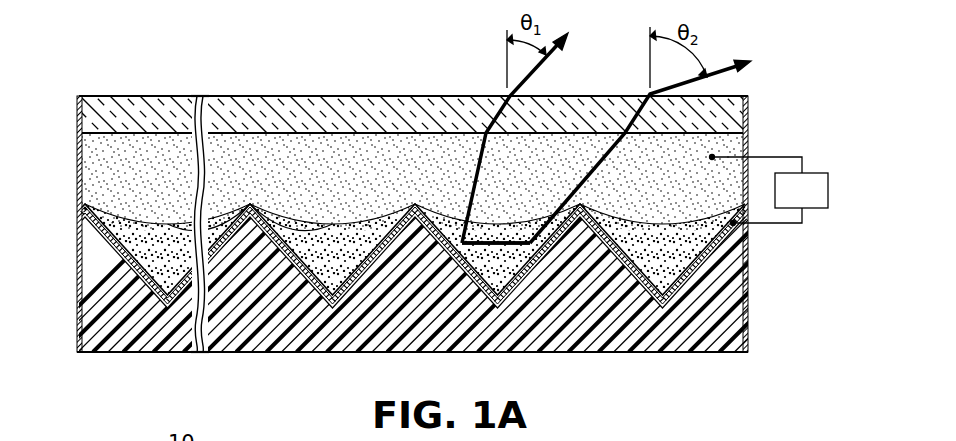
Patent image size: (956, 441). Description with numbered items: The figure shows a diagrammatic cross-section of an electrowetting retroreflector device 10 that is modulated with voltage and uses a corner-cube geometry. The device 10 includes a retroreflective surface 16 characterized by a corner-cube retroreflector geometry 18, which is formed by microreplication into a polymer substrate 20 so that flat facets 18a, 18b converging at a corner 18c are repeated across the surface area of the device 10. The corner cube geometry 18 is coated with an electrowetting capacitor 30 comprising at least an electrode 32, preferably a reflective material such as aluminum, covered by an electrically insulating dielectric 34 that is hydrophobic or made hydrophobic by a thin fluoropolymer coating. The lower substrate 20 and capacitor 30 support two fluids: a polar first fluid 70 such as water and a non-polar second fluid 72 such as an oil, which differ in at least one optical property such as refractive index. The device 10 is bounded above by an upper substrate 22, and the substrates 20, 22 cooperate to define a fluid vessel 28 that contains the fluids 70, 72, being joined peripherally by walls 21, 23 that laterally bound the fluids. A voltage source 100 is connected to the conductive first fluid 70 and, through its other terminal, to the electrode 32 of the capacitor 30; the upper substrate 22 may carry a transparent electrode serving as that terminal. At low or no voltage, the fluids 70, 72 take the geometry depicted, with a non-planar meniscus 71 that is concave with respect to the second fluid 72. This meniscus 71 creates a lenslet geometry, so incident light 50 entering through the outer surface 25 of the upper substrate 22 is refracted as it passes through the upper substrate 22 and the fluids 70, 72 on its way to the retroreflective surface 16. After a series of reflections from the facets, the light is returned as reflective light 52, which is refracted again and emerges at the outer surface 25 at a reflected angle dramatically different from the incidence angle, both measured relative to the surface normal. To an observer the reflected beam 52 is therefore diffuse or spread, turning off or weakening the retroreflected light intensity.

The device 10 is at (210, 59).
The retroreflective surface 16 is at (540, 258).
The corner-cube retroreflector geometry 18 is at (500, 240).
The flat facet 18a is at (450, 223).
The flat facet 18b is at (557, 223).
The corner 18c is at (493, 298).
The polymer substrate 20 is at (92, 301).
The wall 21 is at (83, 133).
The upper substrate 22 is at (83, 105).
The wall 23 is at (750, 118).
The outer surface 25 is at (104, 97).
The fluid vessel 28 is at (749, 323).
The electrowetting capacitor 30 is at (88, 260).
The electrode 32 is at (86, 217).
The dielectric 34 is at (86, 207).
The incident light 50 is at (541, 61).
The reflective light 52 is at (717, 68).
The first fluid 70 is at (93, 158).
The meniscus 71 is at (353, 222).
The second fluid 72 is at (321, 236).
The voltage source 100 is at (769, 190).